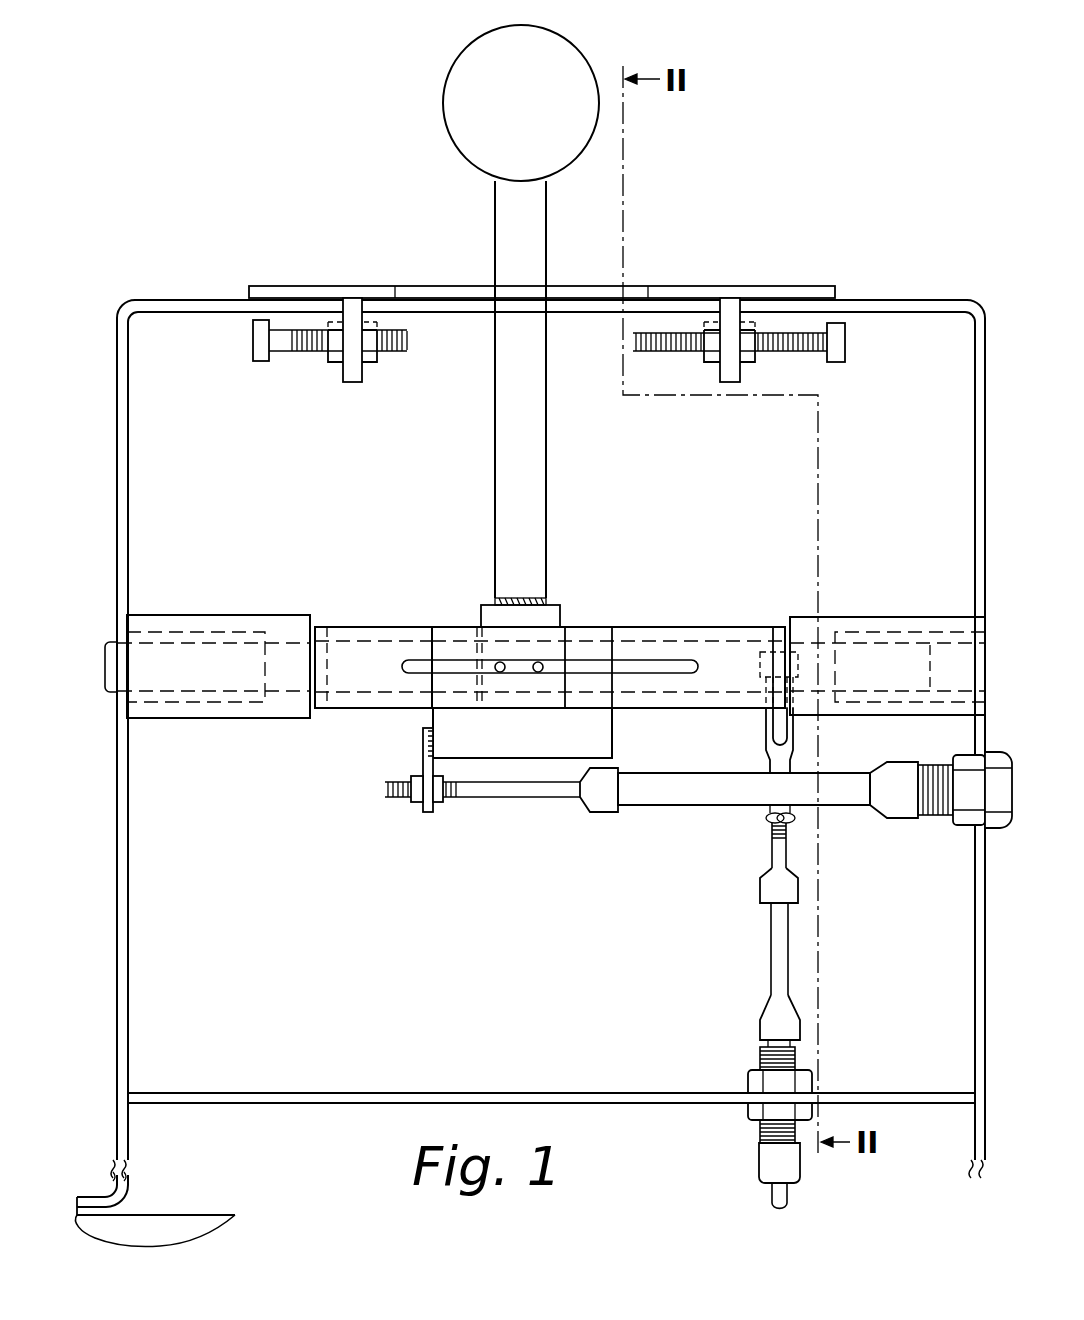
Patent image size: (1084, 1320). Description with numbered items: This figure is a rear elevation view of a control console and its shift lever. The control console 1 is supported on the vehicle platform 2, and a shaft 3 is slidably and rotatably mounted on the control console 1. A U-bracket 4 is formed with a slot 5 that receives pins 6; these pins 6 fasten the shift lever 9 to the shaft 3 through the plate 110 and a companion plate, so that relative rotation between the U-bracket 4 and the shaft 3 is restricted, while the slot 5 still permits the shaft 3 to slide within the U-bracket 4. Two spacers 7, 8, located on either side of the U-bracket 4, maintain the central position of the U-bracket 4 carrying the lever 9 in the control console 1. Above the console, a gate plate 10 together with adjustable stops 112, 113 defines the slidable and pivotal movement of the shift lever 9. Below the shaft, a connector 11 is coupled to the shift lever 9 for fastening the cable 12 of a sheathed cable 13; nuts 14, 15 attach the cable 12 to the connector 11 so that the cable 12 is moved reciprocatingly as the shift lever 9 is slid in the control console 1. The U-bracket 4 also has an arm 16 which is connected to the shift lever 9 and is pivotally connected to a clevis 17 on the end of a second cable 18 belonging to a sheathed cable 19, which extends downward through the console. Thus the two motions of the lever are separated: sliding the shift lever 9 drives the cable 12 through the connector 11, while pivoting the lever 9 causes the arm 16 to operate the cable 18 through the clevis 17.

The control console 1 is at (883, 301).
The vehicle platform 2 is at (186, 1214).
The shaft 3 is at (597, 647).
The U-bracket 4 is at (394, 630).
The slot 5 is at (407, 664).
The pins 6 is at (538, 673).
The spacer 7 is at (225, 621).
The spacer 8 is at (892, 621).
The shift lever 9 is at (546, 456).
The gate plate 10 is at (330, 290).
The connector 11 is at (421, 745).
The cable 12 is at (470, 790).
The sheathed cable 13 is at (716, 774).
The nut 14 is at (418, 803).
The nut 15 is at (438, 803).
The arm 16 is at (768, 634).
The clevis 17 is at (760, 675).
The cable 18 is at (772, 852).
The sheathed cable 19 is at (759, 1025).
The plate 110 is at (487, 611).
The adjustable stop 112 is at (254, 341).
The adjustable stop 113 is at (847, 345).